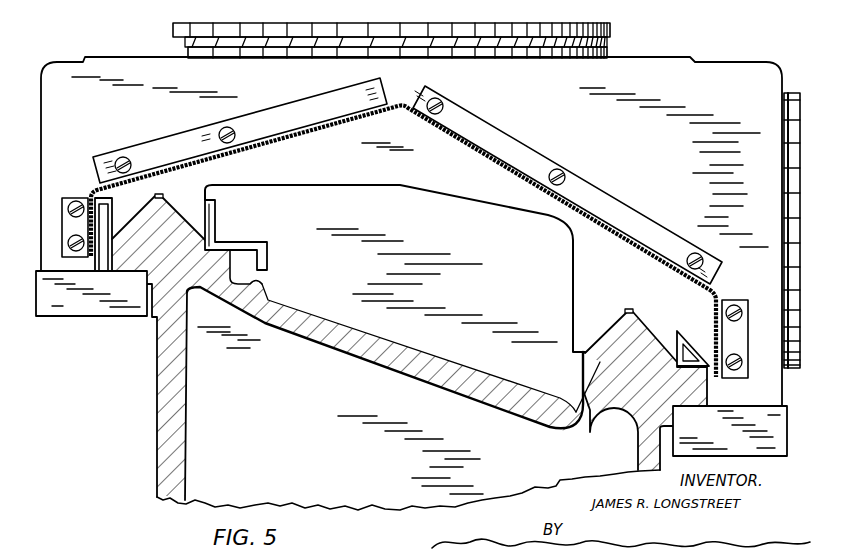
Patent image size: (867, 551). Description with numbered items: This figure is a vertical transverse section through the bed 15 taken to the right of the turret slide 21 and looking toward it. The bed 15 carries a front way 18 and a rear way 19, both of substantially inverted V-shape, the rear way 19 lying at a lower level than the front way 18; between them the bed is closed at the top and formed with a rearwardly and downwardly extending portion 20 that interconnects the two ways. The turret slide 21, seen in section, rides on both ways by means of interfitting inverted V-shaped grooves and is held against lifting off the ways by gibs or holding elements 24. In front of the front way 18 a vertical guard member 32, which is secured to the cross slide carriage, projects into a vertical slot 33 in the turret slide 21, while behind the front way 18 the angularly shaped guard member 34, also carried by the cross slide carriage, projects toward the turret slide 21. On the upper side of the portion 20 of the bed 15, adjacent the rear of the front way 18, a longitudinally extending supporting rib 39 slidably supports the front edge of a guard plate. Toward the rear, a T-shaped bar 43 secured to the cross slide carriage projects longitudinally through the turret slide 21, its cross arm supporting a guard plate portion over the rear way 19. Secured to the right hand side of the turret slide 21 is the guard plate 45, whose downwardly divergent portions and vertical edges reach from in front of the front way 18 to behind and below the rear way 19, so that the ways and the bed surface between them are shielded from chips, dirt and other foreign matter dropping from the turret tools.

The bed 15 is at (163, 421).
The front way 18 is at (167, 219).
The rear way 19 is at (617, 345).
The rearwardly and downwardly extending portion 20 is at (326, 335).
The turret slide 21 is at (713, 83).
The gibs or holding elements 24 is at (80, 302).
The guard member 32 is at (104, 221).
The vertical slot 33 is at (92, 195).
The angularly shaped guard member 34 is at (237, 247).
The supporting rib 39 is at (266, 295).
The T-shaped bar 43 is at (688, 345).
The guard plate 45 is at (296, 102).